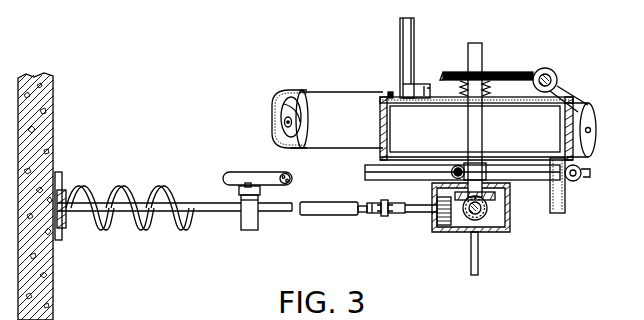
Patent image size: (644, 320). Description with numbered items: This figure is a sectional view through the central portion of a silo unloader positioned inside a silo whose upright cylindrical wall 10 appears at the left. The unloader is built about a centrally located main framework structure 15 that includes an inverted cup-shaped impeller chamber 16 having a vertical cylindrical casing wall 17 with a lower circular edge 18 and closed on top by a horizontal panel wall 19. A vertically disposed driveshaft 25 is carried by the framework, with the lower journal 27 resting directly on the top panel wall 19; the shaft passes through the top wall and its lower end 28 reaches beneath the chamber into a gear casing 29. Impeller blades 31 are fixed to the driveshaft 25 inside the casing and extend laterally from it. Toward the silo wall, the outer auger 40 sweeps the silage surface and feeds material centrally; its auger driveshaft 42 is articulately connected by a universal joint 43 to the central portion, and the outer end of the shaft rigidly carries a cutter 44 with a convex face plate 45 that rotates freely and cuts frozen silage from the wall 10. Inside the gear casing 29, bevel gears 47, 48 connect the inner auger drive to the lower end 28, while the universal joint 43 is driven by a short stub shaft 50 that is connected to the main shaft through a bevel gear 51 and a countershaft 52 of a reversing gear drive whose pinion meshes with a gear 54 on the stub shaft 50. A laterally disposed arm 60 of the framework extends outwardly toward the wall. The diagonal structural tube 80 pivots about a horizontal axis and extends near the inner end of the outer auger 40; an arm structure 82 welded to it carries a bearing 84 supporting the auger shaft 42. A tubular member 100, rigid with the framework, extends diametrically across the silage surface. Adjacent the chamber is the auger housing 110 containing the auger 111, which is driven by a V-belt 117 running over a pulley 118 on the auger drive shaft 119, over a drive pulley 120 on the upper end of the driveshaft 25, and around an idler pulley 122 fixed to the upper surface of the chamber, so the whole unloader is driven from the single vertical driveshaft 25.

The cylindrical wall 10 is at (40, 149).
The main framework structure 15 is at (393, 33).
The impeller chamber 16 is at (390, 92).
The casing wall 17 is at (596, 146).
The lower circular edge 18 is at (367, 166).
The panel wall 19 is at (442, 96).
The driveshaft 25 is at (480, 50).
The lower journal 27 is at (489, 90).
The lower end 28 is at (478, 172).
The gear casing 29 is at (506, 222).
The impeller blades 31 is at (400, 123).
The outer auger 40 is at (118, 196).
The auger driveshaft 42 is at (322, 213).
The universal joint 43 is at (390, 213).
The cutter 44 is at (63, 227).
The convex face plate 45 is at (60, 192).
The bevel gear 47 is at (487, 226).
The bevel gear 48 is at (492, 197).
The stub shaft 50 is at (443, 216).
The bevel gear 51 is at (471, 255).
The countershaft 52 is at (455, 215).
The gear 54 is at (435, 197).
The arm 60 is at (458, 166).
The structural tube 80 is at (237, 173).
The arm structure 82 is at (240, 196).
The bearing 84 is at (258, 218).
The tubular member 100 is at (592, 170).
The auger housing 110 is at (316, 100).
The auger 111 is at (282, 115).
The V-belt 117 is at (488, 68).
The pulley 118 is at (597, 121).
The auger drive shaft 119 is at (285, 123).
The drive pulley 120 is at (490, 71).
The idler pulley 122 is at (559, 78).